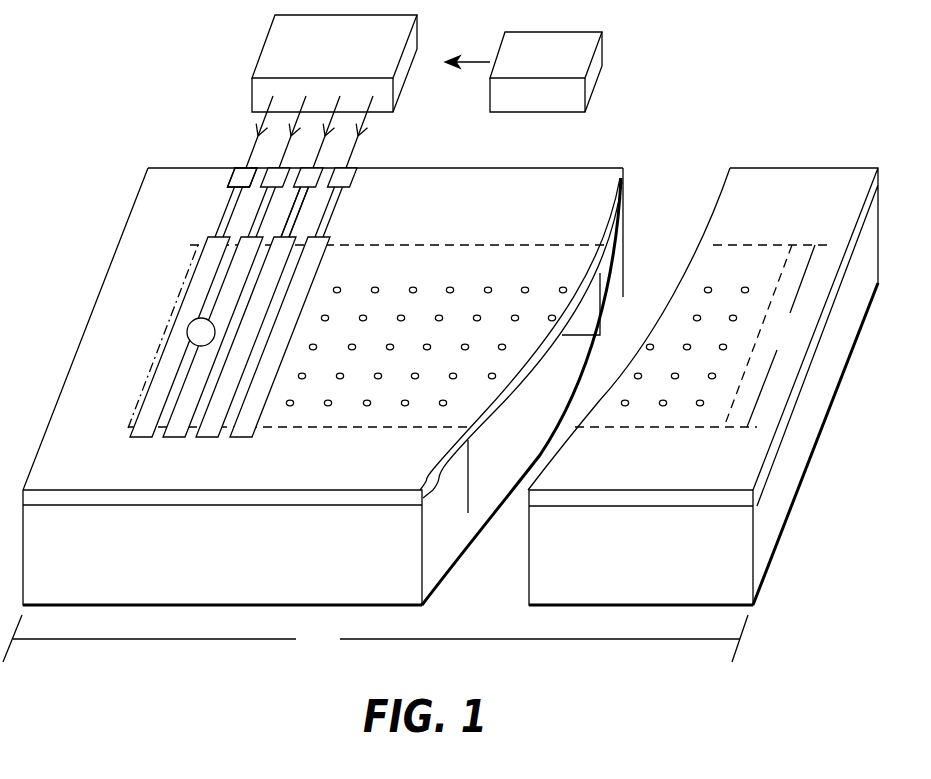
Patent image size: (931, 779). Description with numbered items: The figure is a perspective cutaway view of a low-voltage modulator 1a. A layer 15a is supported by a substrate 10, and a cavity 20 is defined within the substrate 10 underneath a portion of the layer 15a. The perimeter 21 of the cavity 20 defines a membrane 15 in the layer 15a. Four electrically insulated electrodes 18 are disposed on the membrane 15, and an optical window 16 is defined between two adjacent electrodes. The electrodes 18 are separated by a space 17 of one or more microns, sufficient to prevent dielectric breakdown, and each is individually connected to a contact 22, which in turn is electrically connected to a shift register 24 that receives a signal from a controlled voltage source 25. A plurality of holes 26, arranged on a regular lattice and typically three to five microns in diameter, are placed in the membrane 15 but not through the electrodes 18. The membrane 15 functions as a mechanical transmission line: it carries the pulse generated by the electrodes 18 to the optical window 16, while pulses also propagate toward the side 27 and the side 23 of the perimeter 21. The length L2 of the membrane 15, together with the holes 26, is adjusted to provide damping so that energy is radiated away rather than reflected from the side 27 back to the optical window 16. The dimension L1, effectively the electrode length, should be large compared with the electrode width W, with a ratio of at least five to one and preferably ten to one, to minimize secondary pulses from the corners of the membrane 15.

The modulator 1a is at (128, 70).
The substrate 10 is at (440, 553).
The membrane 15 is at (517, 297).
The layer 15a is at (357, 498).
The optical window 16 is at (197, 330).
The space between adjacent electrodes 17 is at (308, 227).
The electrodes 18 is at (210, 370).
The cavity 20 is at (488, 465).
The perimeter of the cavity 21 is at (542, 243).
The contacts 22 is at (238, 178).
The side of the perimeter 23 is at (177, 258).
The shift register 24 is at (350, 58).
The controlled voltage source 25 is at (565, 66).
The holes 26 is at (449, 285).
The side of the perimeter 27 is at (703, 386).
The electrode width W is at (305, 262).
The modulator dimension L1 is at (785, 336).
The membrane length L2 is at (375, 638).